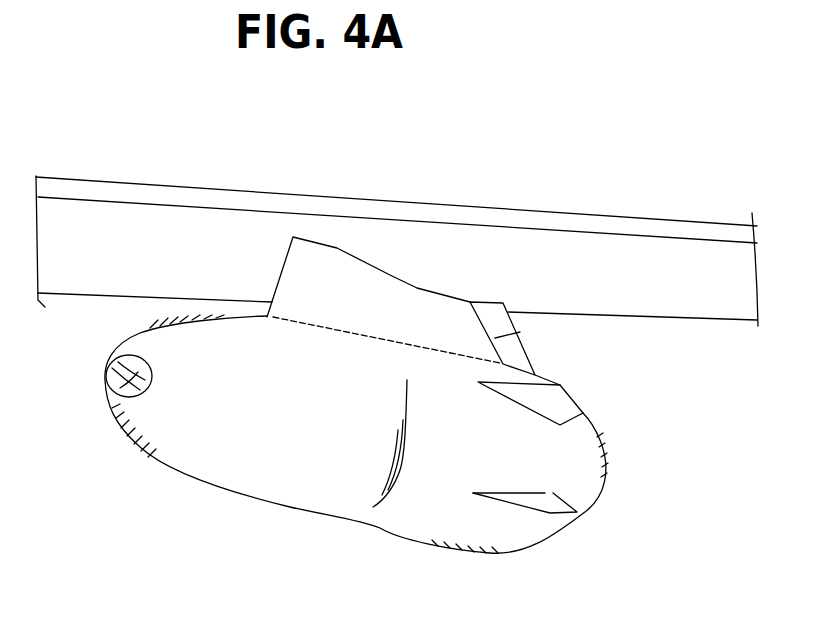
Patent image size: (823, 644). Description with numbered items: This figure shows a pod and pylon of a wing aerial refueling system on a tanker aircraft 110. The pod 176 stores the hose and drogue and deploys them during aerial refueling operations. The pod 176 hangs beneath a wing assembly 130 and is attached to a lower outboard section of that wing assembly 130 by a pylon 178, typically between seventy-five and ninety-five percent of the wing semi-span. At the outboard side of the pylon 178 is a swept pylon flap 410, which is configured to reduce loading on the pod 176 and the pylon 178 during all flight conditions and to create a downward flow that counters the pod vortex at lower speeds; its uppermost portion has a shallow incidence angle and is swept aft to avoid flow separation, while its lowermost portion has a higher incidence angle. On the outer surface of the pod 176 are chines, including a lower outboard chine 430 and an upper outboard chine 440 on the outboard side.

The tanker aircraft 110 is at (628, 172).
The wing assembly 130 is at (168, 183).
The pod 176 is at (160, 467).
The pylon 178 is at (392, 276).
The swept pylon flap 410 is at (517, 342).
The lower outboard chine 430 is at (553, 510).
The upper outboard chine 440 is at (560, 400).